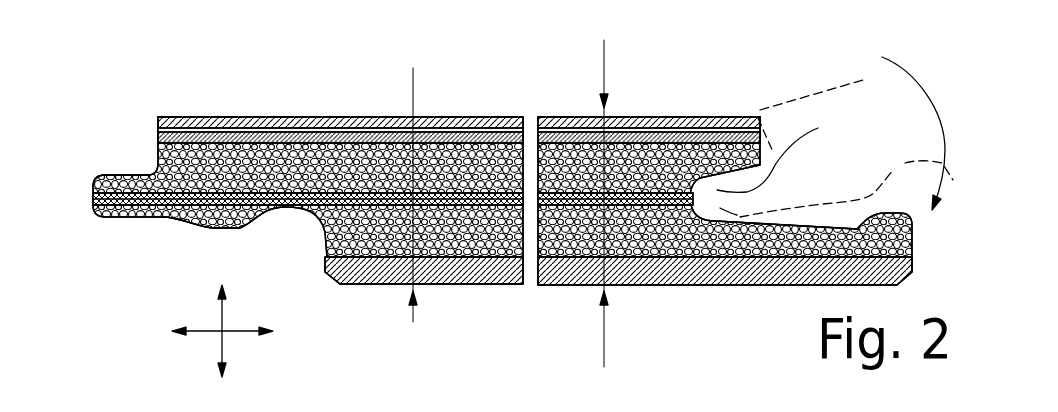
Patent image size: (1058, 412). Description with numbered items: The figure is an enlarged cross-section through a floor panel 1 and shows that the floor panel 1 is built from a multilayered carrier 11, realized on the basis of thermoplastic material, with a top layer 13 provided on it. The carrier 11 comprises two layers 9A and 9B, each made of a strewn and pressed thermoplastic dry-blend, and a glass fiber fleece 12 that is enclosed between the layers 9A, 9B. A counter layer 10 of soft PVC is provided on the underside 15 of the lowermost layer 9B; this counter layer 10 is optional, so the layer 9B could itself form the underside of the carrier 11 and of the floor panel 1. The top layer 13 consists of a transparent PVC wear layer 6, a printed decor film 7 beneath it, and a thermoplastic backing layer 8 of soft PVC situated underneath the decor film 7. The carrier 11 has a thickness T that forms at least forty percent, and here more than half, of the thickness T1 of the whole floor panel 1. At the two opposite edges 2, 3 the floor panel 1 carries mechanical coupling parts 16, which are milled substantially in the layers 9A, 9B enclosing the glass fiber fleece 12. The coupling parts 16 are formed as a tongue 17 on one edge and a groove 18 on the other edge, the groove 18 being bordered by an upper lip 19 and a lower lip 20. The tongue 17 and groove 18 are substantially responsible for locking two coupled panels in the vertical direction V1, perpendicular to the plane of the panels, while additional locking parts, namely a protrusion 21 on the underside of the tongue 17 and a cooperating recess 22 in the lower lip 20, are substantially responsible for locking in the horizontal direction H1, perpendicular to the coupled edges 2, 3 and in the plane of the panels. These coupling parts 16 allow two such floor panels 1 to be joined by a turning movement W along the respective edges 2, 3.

The floor panel 1 is at (233, 250).
The edge 2 is at (131, 158).
The edge 3 is at (806, 168).
The transparent wear layer 6 is at (293, 114).
The printed decor film 7 is at (398, 128).
The thermoplastic backing layer 8 is at (247, 140).
The layer 9A is at (455, 166).
The layer 9B is at (318, 232).
The counter layer 10 is at (457, 273).
The carrier 11 is at (382, 248).
The glass fiber fleece 12 is at (573, 207).
The top layer 13 is at (446, 111).
The underside 15 is at (497, 258).
The mechanical coupling parts 16 is at (133, 238).
The tongue 17 is at (103, 175).
The groove 18 is at (835, 148).
The upper lip 19 is at (665, 172).
The lower lip 20 is at (760, 230).
The protrusion 21 is at (847, 227).
The recess 22 is at (210, 225).
The thickness of the carrier T is at (413, 78).
The thickness of the floor panel T1 is at (604, 52).
The turning movement W is at (932, 97).
The vertical direction V1 is at (224, 318).
The horizontal direction H1 is at (200, 332).